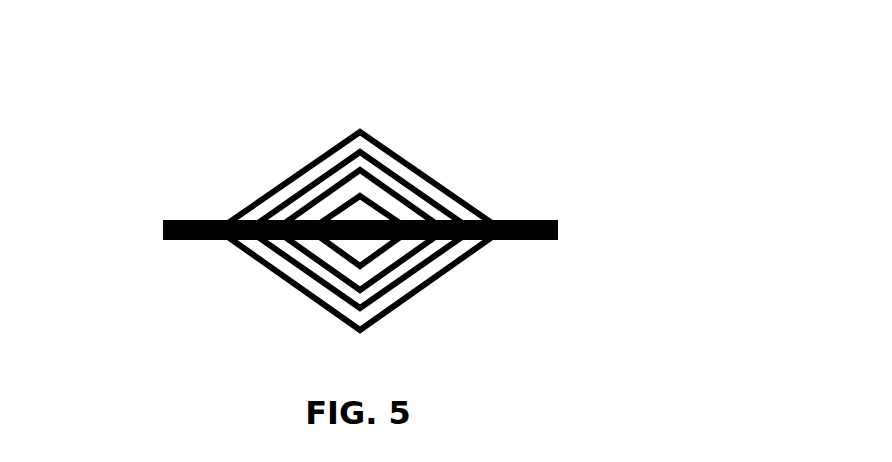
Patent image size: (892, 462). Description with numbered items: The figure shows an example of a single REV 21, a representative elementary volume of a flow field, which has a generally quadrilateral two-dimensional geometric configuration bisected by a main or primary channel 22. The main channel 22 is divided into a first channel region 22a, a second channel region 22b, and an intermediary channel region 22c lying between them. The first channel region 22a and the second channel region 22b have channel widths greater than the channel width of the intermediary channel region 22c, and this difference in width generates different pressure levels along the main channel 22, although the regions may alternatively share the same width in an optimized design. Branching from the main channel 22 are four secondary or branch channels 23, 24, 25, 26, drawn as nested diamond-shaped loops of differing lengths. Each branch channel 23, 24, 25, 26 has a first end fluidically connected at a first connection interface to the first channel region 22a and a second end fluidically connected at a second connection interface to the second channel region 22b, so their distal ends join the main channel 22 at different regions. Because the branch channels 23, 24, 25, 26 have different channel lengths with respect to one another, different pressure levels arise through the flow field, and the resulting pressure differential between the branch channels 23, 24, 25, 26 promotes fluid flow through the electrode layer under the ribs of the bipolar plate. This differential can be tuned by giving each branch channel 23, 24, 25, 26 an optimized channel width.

The REV 21 is at (103, 109).
The main channel 22 is at (172, 236).
The first channel region 22a is at (213, 222).
The second channel region 22b is at (478, 231).
The intermediary channel region 22c is at (343, 228).
The branch channel 23 is at (354, 132).
The branch channel 24 is at (358, 152).
The branch channel 25 is at (358, 169).
The branch channel 26 is at (360, 197).